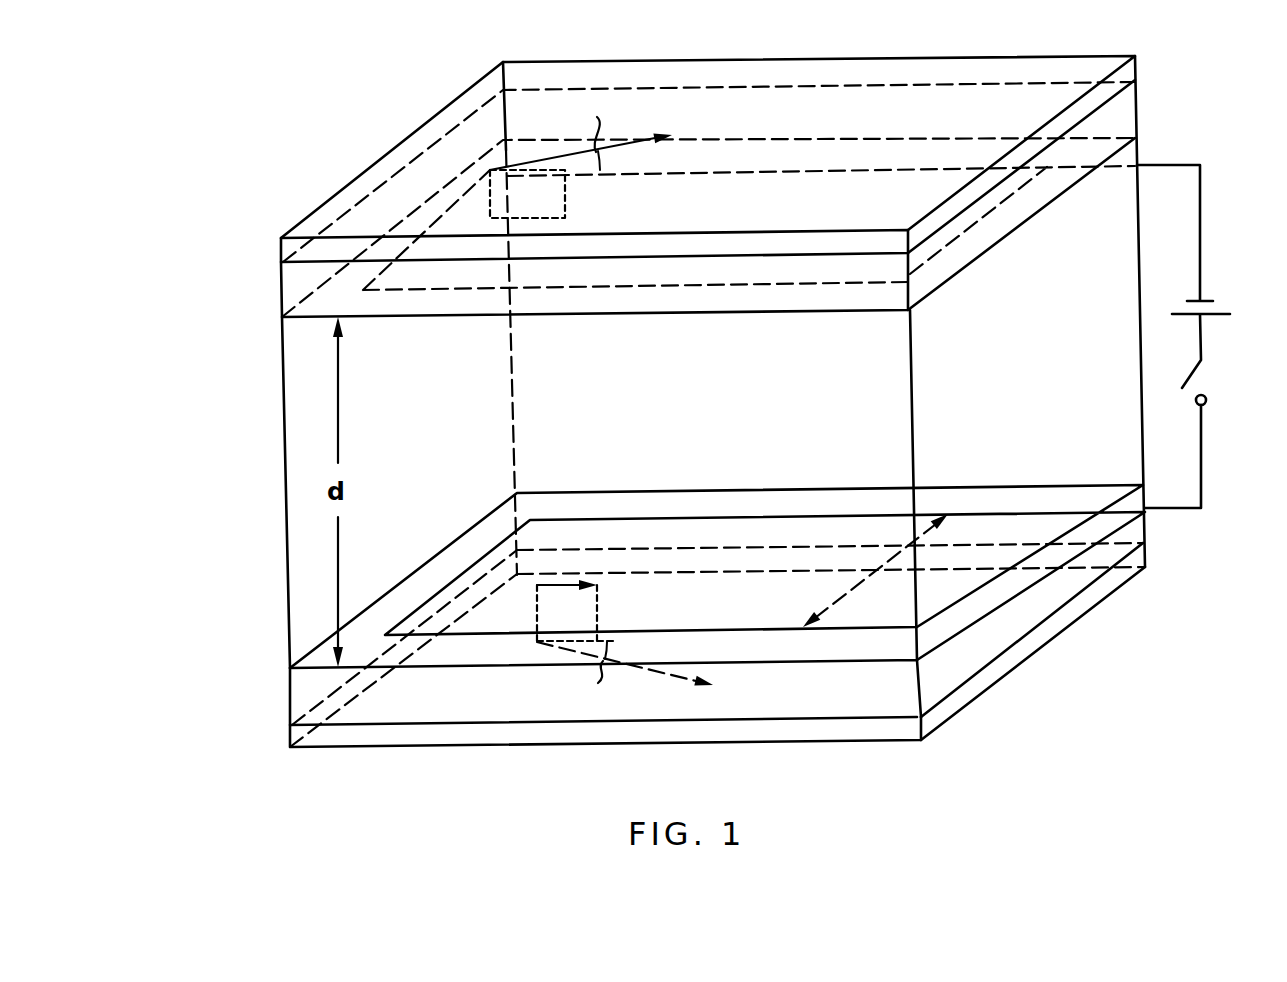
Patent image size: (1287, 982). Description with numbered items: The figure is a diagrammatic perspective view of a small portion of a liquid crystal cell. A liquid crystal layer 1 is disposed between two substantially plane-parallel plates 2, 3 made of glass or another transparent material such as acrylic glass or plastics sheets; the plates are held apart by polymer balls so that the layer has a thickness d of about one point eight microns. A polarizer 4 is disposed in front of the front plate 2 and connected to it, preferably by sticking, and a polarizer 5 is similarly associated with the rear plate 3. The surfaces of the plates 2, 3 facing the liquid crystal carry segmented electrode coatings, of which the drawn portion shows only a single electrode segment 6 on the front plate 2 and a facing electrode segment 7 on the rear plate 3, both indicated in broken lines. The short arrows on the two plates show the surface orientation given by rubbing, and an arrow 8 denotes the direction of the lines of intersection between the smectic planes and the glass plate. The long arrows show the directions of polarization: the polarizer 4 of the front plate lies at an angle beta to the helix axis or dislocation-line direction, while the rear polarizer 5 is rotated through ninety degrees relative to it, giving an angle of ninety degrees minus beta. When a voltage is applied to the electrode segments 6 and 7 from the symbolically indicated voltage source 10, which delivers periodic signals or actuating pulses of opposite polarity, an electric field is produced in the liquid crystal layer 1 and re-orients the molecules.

The liquid crystal layer 1 is at (300, 492).
The front plate 2 is at (290, 295).
The rear plate 3 is at (298, 696).
The polarizer 4 is at (282, 252).
The polarizer 5 is at (297, 740).
The electrode segment 6 is at (632, 177).
The electrode segment 7 is at (618, 633).
The arrow 8 is at (847, 598).
The voltage source 10 is at (1205, 298).